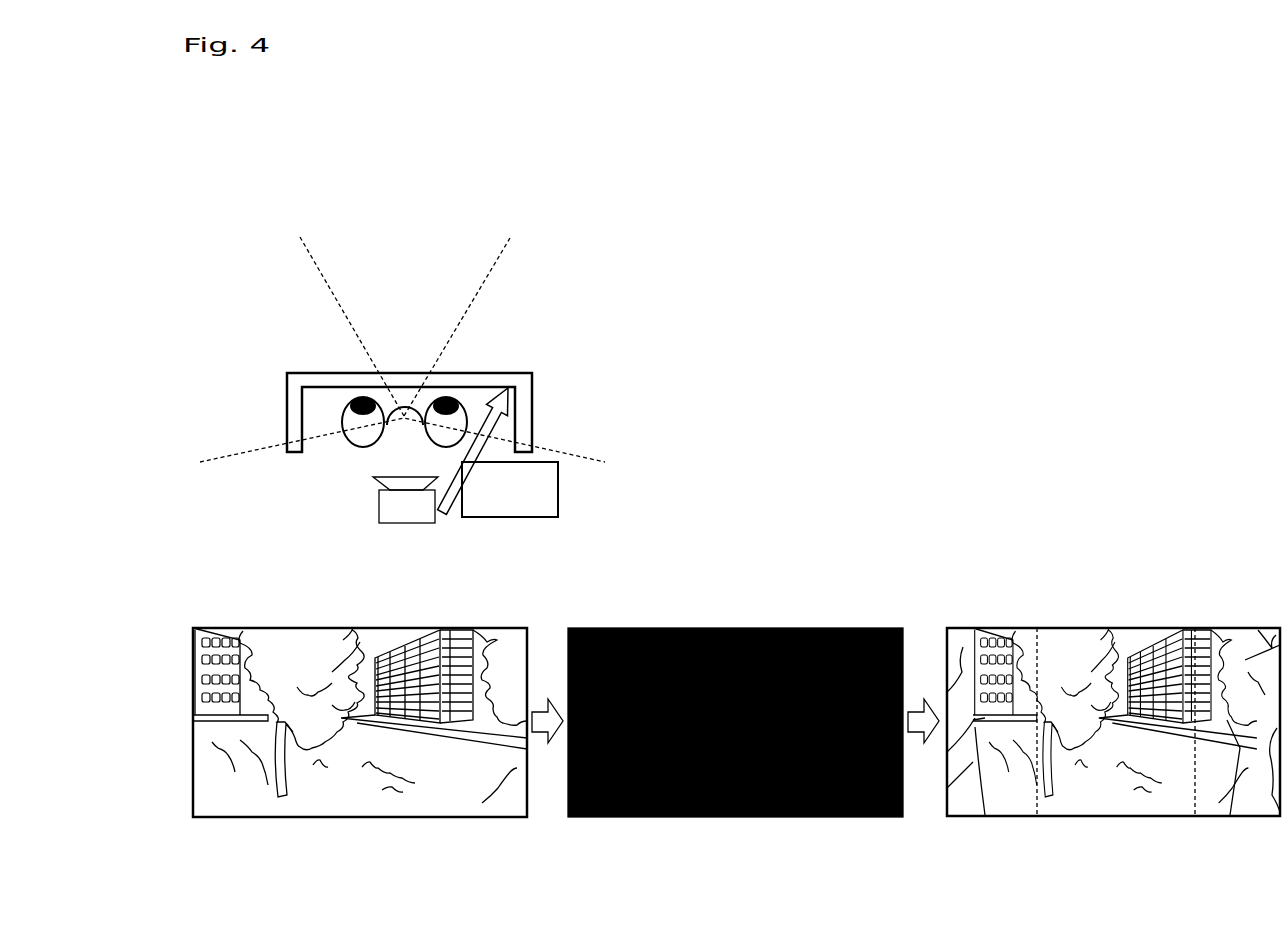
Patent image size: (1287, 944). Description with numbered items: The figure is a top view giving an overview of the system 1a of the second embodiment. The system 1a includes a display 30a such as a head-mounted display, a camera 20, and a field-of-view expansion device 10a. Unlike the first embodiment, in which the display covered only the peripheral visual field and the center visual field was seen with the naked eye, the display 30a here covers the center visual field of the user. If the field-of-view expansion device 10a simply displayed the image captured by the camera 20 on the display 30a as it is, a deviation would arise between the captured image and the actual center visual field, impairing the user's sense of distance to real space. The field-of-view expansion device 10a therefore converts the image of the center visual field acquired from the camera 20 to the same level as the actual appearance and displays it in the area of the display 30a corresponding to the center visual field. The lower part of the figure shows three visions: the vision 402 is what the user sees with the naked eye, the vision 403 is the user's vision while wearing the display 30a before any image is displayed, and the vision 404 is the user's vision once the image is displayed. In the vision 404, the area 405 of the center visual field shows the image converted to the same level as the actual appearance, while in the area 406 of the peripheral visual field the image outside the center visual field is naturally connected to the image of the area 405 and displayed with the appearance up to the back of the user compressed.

The system 1a is at (545, 240).
The display 30a is at (532, 395).
The camera 20 is at (379, 505).
The field-of-view expansion device 10a is at (558, 497).
The vision viewed with the naked eye 402 is at (360, 737).
The vision with display worn and no image displayed 403 is at (735, 737).
The vision with image displayed on the display 404 is at (1113, 736).
The area of the center visual field of the display 405 is at (1102, 628).
The area of the peripheral visual field of the display 406 is at (1020, 808).